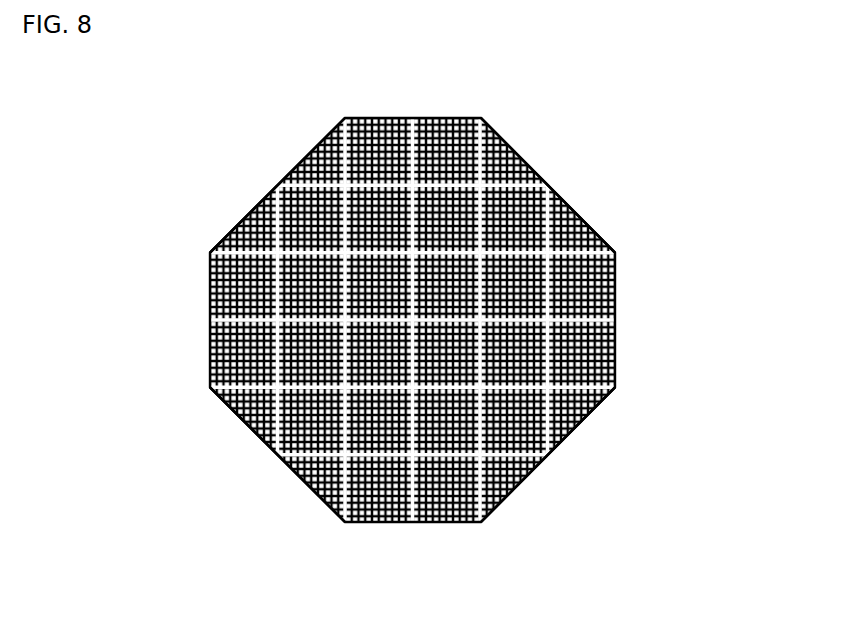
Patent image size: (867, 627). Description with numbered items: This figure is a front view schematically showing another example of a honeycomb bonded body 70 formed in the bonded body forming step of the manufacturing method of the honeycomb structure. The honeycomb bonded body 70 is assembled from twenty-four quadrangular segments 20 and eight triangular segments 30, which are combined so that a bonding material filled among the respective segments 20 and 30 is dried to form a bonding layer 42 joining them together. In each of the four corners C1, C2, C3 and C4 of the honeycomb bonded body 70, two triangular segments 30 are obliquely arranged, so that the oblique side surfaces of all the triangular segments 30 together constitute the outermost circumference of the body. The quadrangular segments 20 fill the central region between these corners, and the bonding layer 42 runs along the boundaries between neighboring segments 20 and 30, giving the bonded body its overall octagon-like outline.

The quadrangular segment 20 is at (375, 117).
The triangular segment 30 is at (309, 156).
The bonding layer 42 is at (344, 117).
The honeycomb bonded body 70 is at (656, 124).
The corner C1 is at (581, 158).
The corner C2 is at (596, 479).
The corner C3 is at (210, 491).
The corner C4 is at (225, 146).